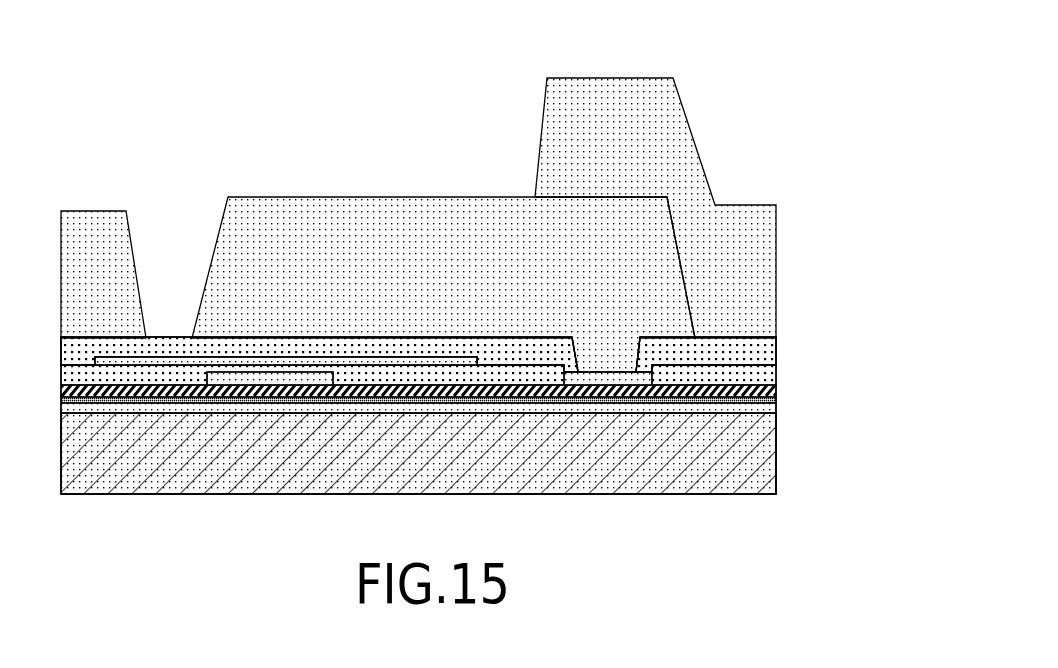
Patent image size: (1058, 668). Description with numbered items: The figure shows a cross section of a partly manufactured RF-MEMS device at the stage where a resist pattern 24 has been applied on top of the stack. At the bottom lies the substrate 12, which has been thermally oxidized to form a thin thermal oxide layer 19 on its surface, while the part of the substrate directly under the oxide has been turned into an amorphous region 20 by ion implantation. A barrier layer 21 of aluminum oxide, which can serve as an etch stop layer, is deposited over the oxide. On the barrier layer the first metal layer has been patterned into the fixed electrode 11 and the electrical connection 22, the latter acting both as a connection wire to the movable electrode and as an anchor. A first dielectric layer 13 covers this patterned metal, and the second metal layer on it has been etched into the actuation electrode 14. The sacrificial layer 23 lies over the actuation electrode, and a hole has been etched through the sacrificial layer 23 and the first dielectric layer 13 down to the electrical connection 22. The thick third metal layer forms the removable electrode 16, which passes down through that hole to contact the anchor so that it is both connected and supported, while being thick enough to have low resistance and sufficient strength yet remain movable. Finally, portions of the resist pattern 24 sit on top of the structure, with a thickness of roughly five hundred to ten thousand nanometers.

The fixed electrode 11 is at (305, 378).
The substrate 12 is at (675, 480).
The first dielectric layer 13 is at (88, 358).
The actuation electrode 14 is at (170, 360).
The removable electrode 16 is at (288, 222).
The thermal oxide layer 19 is at (728, 390).
The amorphous region 20 is at (593, 408).
The barrier layer 21 is at (442, 388).
The electrical connection 22 is at (646, 365).
The sacrificial layer 23 is at (493, 352).
The resist pattern 24 is at (78, 230).